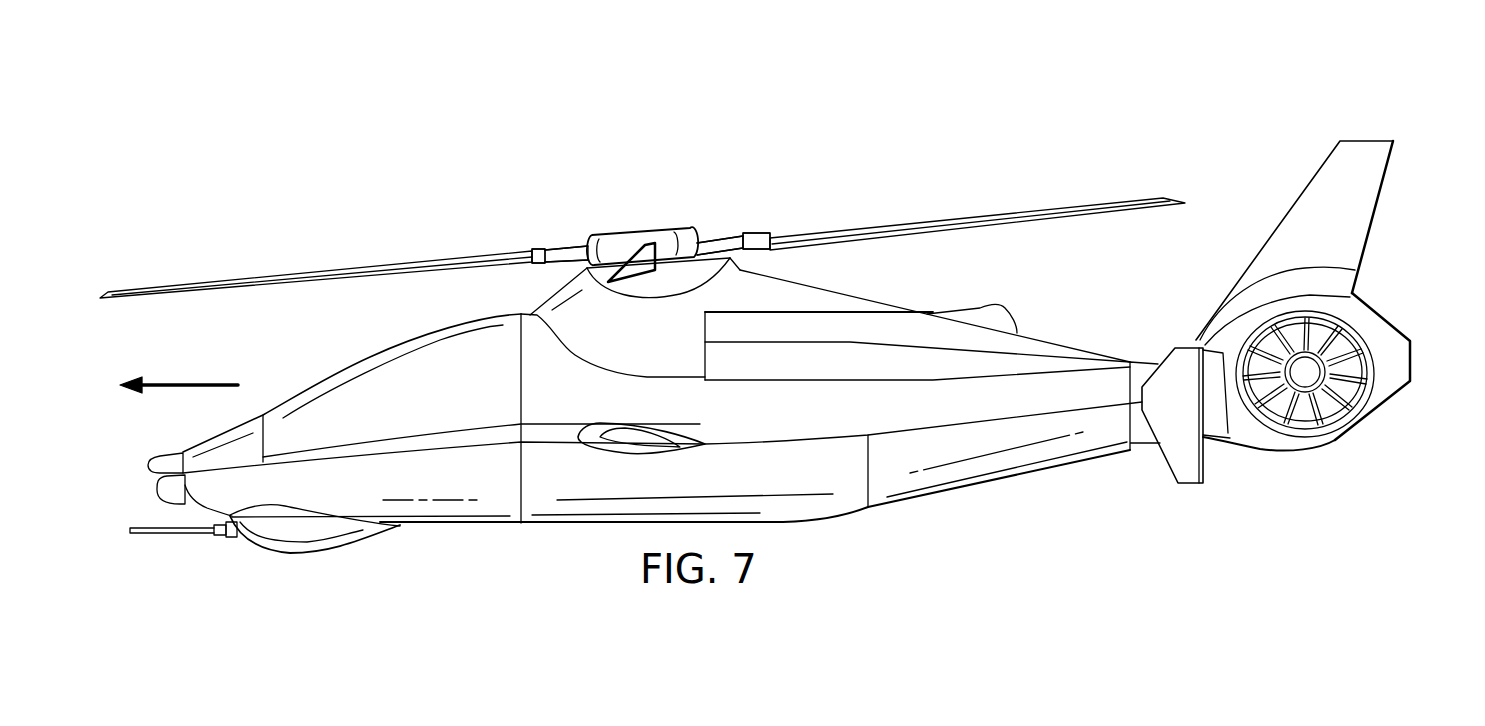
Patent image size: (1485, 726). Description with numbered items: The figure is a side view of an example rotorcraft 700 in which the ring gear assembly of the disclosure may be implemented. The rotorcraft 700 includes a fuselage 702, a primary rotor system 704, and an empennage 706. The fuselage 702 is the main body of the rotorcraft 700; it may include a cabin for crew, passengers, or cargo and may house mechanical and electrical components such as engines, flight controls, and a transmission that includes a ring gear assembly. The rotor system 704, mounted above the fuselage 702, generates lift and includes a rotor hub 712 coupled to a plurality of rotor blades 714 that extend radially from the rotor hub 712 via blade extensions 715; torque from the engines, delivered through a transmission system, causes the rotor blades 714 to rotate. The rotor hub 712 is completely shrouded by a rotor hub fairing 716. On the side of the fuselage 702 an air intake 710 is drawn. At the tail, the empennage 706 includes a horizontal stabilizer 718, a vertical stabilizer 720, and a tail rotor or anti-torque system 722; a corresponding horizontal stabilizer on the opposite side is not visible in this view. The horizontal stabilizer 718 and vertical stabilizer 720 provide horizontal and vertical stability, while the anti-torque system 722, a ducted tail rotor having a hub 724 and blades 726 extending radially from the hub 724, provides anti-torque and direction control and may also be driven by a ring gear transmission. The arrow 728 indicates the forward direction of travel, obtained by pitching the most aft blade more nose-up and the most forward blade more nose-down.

The rotorcraft 700 is at (292, 120).
The fuselage 702 is at (848, 407).
The primary rotor system 704 is at (671, 144).
The empennage 706 is at (1402, 248).
The air intake 710 is at (670, 424).
The rotor hub 712 is at (661, 228).
The rotor blades 714 is at (300, 273).
The blade extensions 715 is at (565, 247).
The rotor hub fairing 716 is at (630, 247).
The horizontal stabilizer 718 is at (1185, 477).
The vertical stabilizer 720 is at (1390, 165).
The tail rotor or anti-torque system 722 is at (1330, 448).
The hub 724 is at (1310, 373).
The blades 726 is at (1355, 362).
The arrow 728 is at (192, 382).